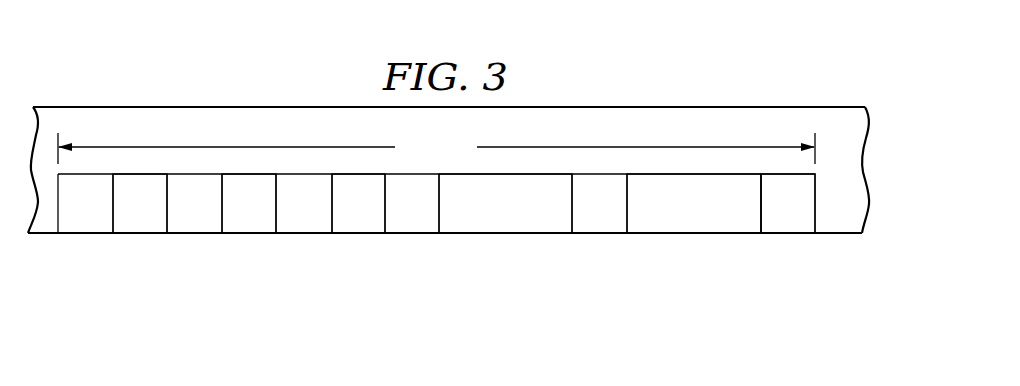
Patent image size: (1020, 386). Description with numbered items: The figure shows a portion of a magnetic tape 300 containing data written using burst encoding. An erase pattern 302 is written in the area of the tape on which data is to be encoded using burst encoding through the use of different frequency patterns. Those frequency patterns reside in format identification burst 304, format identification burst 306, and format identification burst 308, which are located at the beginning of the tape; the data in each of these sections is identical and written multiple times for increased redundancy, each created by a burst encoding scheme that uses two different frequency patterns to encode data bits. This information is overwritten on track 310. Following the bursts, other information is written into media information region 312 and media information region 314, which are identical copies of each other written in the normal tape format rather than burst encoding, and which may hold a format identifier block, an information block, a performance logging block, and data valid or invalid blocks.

The tape 300 is at (624, 53).
The erase pattern 302 is at (703, 115).
The format identification burst 304 is at (145, 225).
The format identification burst 306 is at (248, 225).
The format identification burst 308 is at (360, 225).
The track 310 is at (816, 219).
The media information region 312 is at (500, 223).
The media information region 314 is at (697, 225).